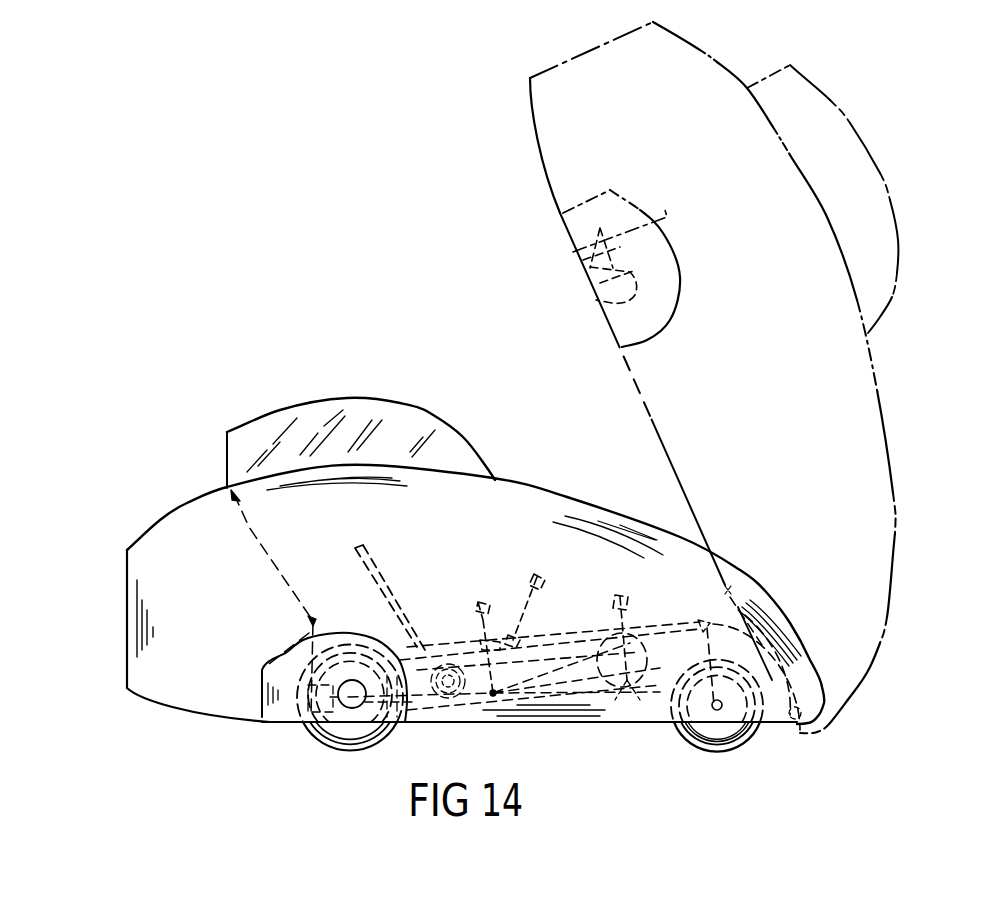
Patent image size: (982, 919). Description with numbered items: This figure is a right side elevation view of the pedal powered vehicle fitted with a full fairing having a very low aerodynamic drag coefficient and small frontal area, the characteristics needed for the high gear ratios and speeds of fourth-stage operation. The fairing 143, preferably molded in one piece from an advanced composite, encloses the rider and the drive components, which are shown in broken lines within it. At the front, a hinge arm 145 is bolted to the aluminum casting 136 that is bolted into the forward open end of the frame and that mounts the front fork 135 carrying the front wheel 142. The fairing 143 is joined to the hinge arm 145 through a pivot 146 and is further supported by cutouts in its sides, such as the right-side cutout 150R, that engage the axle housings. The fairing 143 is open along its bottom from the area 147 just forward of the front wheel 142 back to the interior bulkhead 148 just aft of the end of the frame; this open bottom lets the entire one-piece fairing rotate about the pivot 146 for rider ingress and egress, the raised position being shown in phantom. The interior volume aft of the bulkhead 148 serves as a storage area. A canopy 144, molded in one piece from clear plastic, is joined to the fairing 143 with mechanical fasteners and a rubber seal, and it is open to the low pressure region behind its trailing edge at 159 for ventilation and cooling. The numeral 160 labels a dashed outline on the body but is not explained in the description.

The front fork 135 is at (727, 613).
The aluminum casting 136 is at (717, 615).
The front wheel 142 is at (683, 740).
The fairing 143 is at (570, 495).
The canopy 144 is at (403, 402).
The hinge arm 145 is at (783, 607).
The pivot 146 is at (800, 727).
The area just forward of the front wheel 147 is at (760, 723).
The interior bulkhead 148 is at (310, 623).
The cutout in the fairing 150R is at (335, 731).
The trailing edge of the canopy 159 is at (227, 450).
The door 160 is at (249, 527).